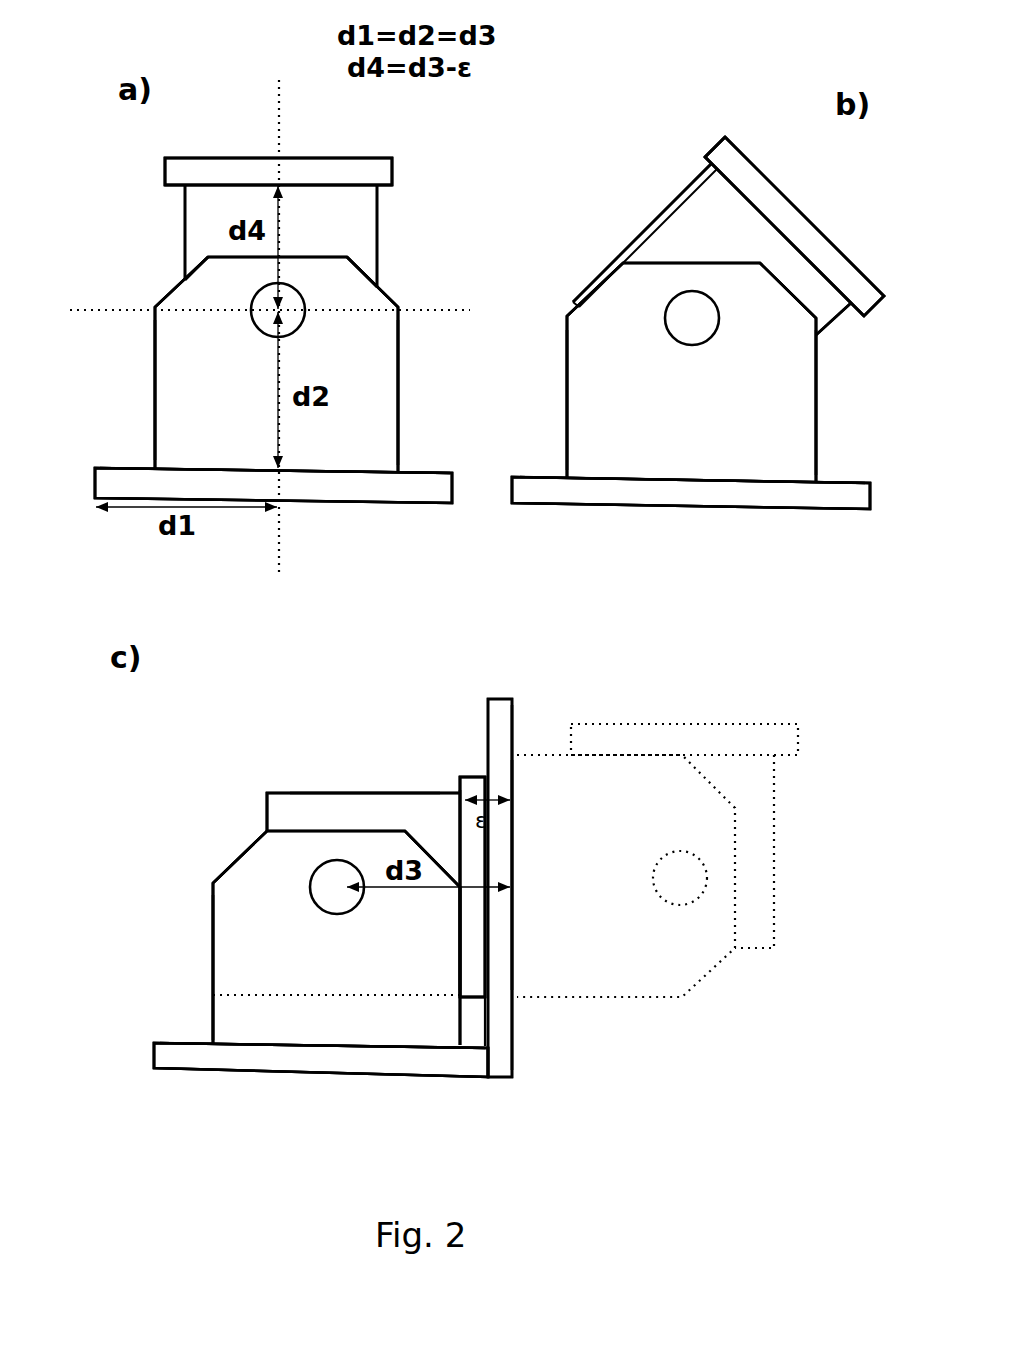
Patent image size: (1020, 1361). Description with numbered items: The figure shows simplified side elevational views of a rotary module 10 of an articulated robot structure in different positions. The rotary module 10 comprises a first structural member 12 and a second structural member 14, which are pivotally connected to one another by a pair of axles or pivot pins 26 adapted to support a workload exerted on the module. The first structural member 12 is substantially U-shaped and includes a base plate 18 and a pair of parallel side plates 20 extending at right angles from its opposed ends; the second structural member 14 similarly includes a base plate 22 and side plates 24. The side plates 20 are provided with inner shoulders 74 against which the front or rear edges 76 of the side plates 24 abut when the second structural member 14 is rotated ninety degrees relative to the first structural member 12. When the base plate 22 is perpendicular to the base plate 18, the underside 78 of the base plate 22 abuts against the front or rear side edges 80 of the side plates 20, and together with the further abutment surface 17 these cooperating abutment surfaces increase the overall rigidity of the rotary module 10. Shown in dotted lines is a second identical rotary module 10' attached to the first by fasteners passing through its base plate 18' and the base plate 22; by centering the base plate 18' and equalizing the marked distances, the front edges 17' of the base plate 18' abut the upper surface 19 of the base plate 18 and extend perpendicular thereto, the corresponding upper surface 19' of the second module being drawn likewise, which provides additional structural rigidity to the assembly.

In FIG. 2a, the rotary module 10 is at (238, 330).
In FIG. 2b, the rotary module 10 is at (724, 332).
In FIG. 2c, the rotary module 10 is at (271, 957).
In FIG. 2c, the second identical rotary module 10' is at (643, 900).
In FIG. 2a, the first structural member 12 is at (138, 414).
In FIG. 2b, the first structural member 12 is at (556, 424).
In FIG. 2c, the first structural member 12 is at (203, 970).
In FIG. 2a, the second structural member 14 is at (165, 230).
In FIG. 2b, the second structural member 14 is at (600, 230).
In FIG. 2c, the second structural member 14 is at (318, 750).
In FIG. 2a, the abutment surface 17 is at (253, 515).
In FIG. 2b, the abutment surface 17 is at (707, 537).
In FIG. 2c, the abutment surface 17 is at (369, 1072).
In FIG. 2c, the front edges of base plate of second module 17' is at (545, 879).
In FIG. 2a, the base plate 18 is at (295, 438).
In FIG. 2b, the base plate 18 is at (692, 483).
In FIG. 2c, the base plate 18 is at (329, 1090).
In FIG. 2c, the base plate of second rotary module 18' is at (551, 863).
In FIG. 2c, the upper surface 19 is at (349, 1019).
In FIG. 2c, the upper surface of base plate of second module 19' is at (555, 875).
In FIG. 2a, the side plates 20 is at (348, 362).
In FIG. 2b, the side plates 20 is at (805, 378).
In FIG. 2c, the side plates 20 is at (243, 887).
In FIG. 2a, the base plate 22 is at (325, 160).
In FIG. 2b, the base plate 22 is at (778, 210).
In FIG. 2c, the base plate 22 is at (475, 782).
In FIG. 2a, the side plates 24 is at (352, 215).
In FIG. 2b, the side plates 24 is at (680, 217).
In FIG. 2c, the side plates 24 is at (392, 815).
In FIG. 2a, the pivot pins 26 is at (318, 289).
In FIG. 2b, the pivot pins 26 is at (668, 297).
In FIG. 2c, the pivot pins 26 is at (325, 848).
In FIG. 2c, the inner shoulders 74 is at (305, 993).
In FIG. 2a, the front or rear edges 76 is at (363, 240).
In FIG. 2b, the front or rear edges 76 is at (713, 170).
In FIG. 2c, the front or rear edges 76 is at (360, 792).
In FIG. 2a, the underside 78 is at (230, 187).
In FIG. 2b, the underside 78 is at (740, 198).
In FIG. 2c, the underside 78 is at (462, 822).
In FIG. 2a, the front or rear side edges 80 is at (153, 392).
In FIG. 2b, the front or rear side edges 80 is at (565, 370).
In FIG. 2c, the front or rear side edges 80 is at (212, 930).